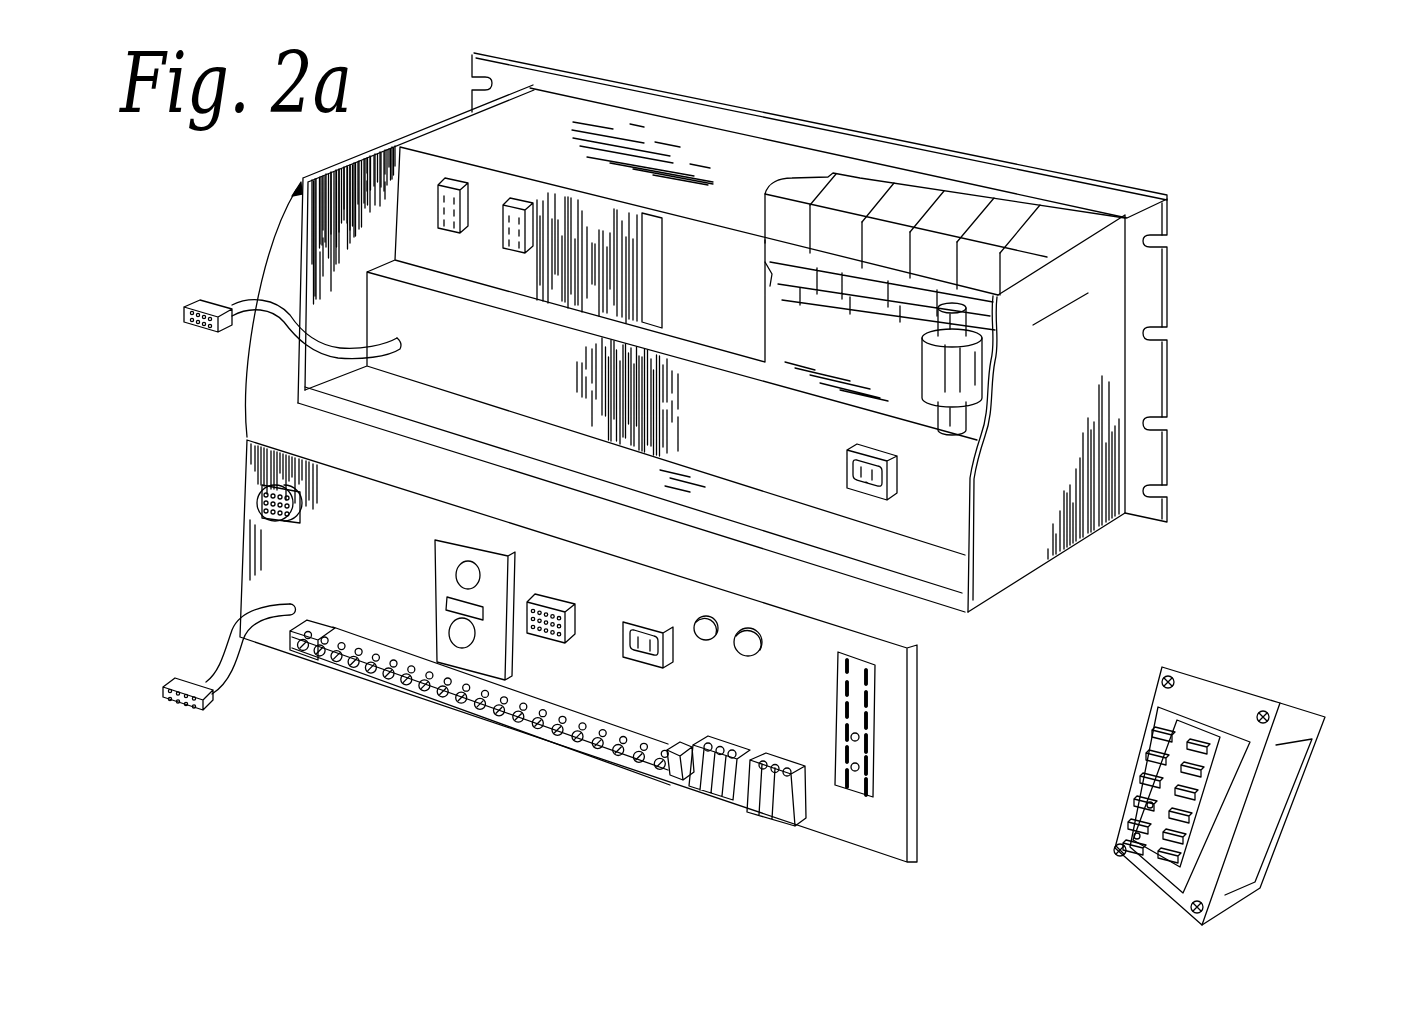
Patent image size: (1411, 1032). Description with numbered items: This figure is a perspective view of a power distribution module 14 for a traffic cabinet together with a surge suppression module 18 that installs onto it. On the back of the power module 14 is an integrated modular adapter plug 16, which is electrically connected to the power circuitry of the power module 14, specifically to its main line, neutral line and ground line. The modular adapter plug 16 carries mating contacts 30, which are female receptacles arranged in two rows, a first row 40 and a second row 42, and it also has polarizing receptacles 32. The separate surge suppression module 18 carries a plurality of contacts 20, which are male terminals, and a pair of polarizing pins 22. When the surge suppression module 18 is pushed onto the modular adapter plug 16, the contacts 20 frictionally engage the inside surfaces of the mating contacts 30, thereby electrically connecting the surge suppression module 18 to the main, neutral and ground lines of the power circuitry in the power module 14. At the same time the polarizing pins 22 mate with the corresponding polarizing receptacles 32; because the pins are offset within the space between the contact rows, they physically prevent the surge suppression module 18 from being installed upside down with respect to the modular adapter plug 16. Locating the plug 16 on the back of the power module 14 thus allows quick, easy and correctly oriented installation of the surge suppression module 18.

The power distribution module 14 is at (1216, 204).
The integrated modular adapter plug 16 is at (878, 712).
The surge suppression module 18 is at (1230, 690).
The contacts 20 is at (1207, 748).
The polarizing pins 22 is at (1134, 836).
The mating contacts 30 is at (843, 686).
The polarizing receptacles 32 is at (851, 766).
The first row 40 is at (863, 803).
The second row 42 is at (840, 801).